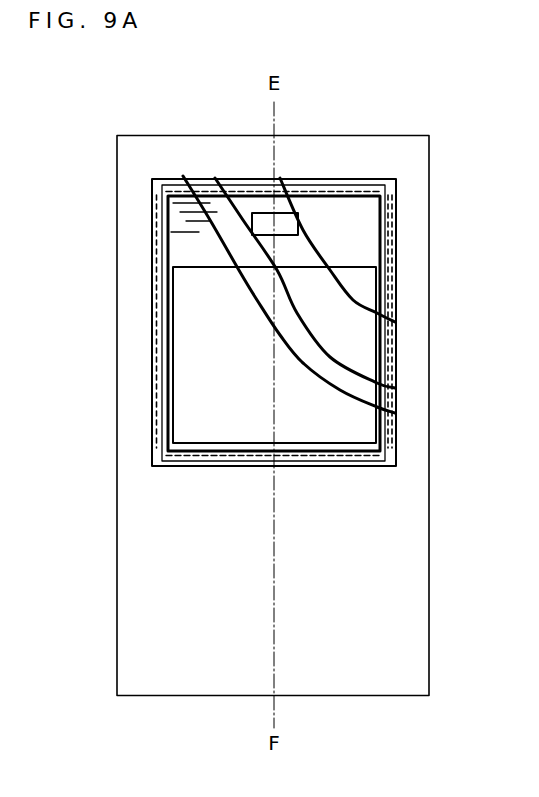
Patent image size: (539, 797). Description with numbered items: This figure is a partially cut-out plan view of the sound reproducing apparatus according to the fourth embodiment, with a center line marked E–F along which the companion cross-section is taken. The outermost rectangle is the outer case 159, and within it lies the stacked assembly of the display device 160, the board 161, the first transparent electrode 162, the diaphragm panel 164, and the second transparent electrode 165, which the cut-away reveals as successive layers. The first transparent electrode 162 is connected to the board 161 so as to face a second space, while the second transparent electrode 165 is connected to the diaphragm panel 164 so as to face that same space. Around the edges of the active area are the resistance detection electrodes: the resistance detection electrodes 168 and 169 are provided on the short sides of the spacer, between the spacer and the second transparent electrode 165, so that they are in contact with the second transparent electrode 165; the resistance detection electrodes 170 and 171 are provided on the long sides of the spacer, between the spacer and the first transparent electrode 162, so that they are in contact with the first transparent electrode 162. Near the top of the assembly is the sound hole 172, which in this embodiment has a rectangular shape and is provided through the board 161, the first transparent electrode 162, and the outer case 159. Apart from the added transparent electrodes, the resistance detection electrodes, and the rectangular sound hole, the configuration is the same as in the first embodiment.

The outer case 159 is at (398, 577).
The display device 160 is at (190, 403).
The board 161 is at (330, 245).
The first transparent electrode 162 is at (328, 289).
The diaphragm panel 164 is at (318, 396).
The second transparent electrode 165 is at (310, 355).
The resistance detection electrode 168 is at (364, 184).
The resistance detection electrode 169 is at (163, 457).
The resistance detection electrode 170 is at (393, 437).
The resistance detection electrode 171 is at (153, 287).
The sound hole 172 is at (283, 227).